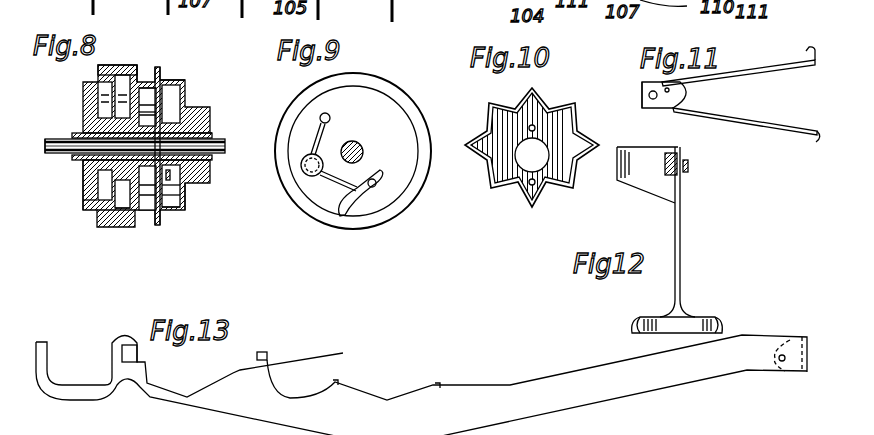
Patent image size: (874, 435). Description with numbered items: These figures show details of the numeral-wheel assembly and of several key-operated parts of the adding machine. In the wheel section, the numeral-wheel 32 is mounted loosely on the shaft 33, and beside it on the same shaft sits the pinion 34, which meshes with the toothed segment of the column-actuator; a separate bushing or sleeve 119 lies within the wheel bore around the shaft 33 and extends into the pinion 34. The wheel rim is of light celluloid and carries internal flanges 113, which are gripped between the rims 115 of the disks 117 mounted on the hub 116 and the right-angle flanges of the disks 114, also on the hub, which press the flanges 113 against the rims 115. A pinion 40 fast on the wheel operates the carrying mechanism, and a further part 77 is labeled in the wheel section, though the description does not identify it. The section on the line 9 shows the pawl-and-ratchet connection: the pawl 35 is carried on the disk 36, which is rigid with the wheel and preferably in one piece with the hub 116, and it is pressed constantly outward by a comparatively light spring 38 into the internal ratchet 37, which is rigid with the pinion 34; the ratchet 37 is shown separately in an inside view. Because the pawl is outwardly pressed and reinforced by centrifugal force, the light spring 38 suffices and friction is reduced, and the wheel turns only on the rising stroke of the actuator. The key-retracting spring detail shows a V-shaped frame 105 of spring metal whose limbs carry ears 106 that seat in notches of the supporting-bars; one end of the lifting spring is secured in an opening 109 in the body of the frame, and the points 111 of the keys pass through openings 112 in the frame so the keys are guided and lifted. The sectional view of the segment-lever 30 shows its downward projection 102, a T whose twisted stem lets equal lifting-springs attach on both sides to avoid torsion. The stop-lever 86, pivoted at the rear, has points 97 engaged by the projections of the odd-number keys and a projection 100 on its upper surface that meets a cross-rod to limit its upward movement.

In FIG. 8, the section line 9 is at (152, 63).
In FIG. 8, the rims of disks 115 is at (140, 80).
In FIG. 8, the spring 77 is at (141, 100).
In FIG. 8, the points of keys 111 is at (230, 23).
In FIG. 8, the disks 117 is at (140, 112).
In FIG. 8, the numeral-wheels 32 is at (105, 60).
In FIG. 8, the shaft 33 is at (226, 143).
In FIG. 9, the shaft 33 is at (337, 142).
In FIG. 8, the bushing or sleeve 119 is at (213, 158).
In FIG. 9, the bushing or sleeve 119 is at (362, 145).
In FIG. 8, the hub 116 is at (85, 165).
In FIG. 8, the pinion 40 is at (82, 195).
In FIG. 8, the disks 114 is at (105, 208).
In FIG. 8, the internal flanges 113 is at (128, 213).
In FIG. 8, the pawl 35 is at (165, 200).
In FIG. 9, the pawl 35 is at (347, 203).
In FIG. 8, the internal ratchet 37 is at (182, 210).
In FIG. 10, the internal ratchet 37 is at (487, 187).
In FIG. 8, the pinion 34 is at (182, 192).
In FIG. 8, the spring 38 is at (182, 197).
In FIG. 9, the spring 38 is at (327, 180).
In FIG. 9, the disk 36 is at (383, 200).
In FIG. 11, the openings 109 is at (667, 98).
In FIG. 11, the openings 112 is at (645, 90).
In FIG. 11, the V-shaped frames 105 is at (750, 70).
In FIG. 11, the ears 106 is at (813, 45).
In FIG. 12, the segment-levers 30 is at (680, 200).
In FIG. 12, the downward projection 102 is at (685, 320).
In FIG. 13, the lever 86 is at (421, 385).
In FIG. 13, the points 97 is at (118, 340).
In FIG. 13, the projection 100 is at (265, 353).